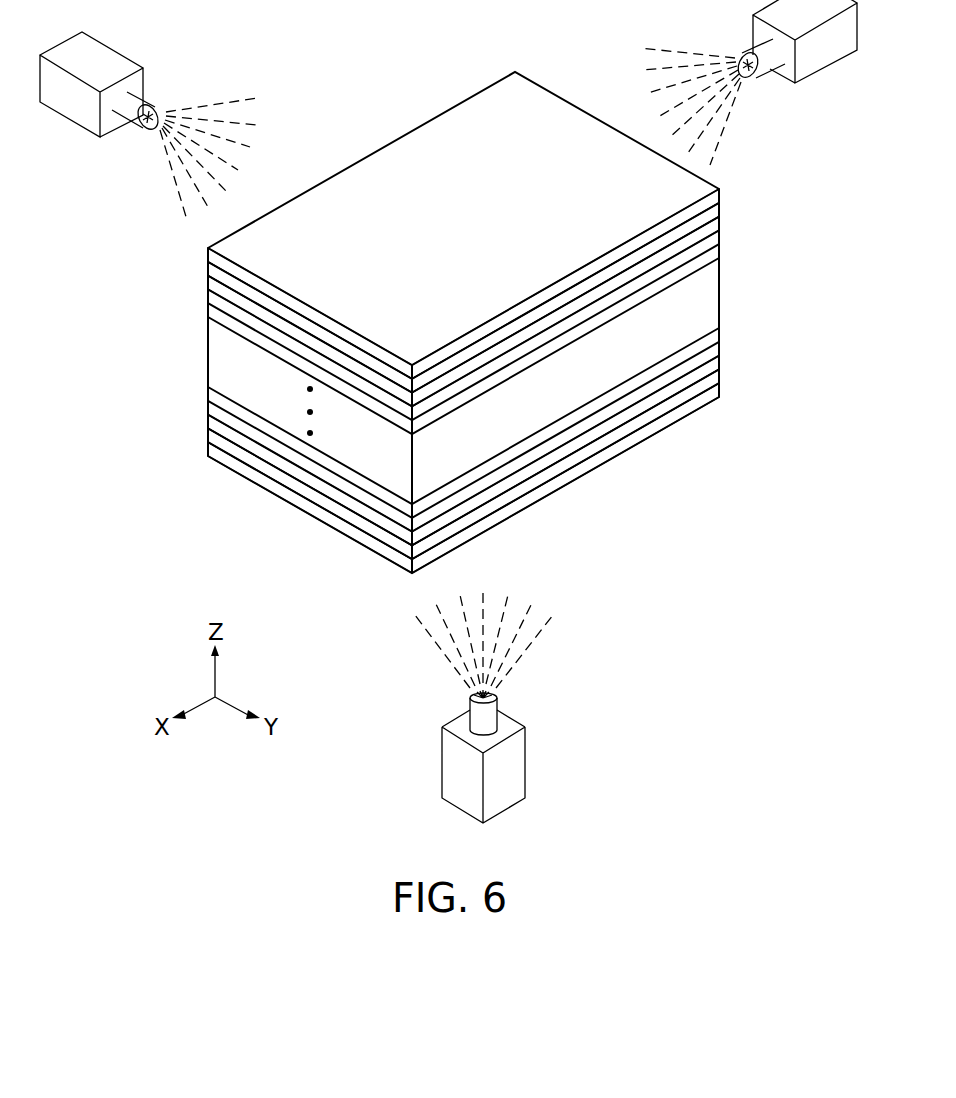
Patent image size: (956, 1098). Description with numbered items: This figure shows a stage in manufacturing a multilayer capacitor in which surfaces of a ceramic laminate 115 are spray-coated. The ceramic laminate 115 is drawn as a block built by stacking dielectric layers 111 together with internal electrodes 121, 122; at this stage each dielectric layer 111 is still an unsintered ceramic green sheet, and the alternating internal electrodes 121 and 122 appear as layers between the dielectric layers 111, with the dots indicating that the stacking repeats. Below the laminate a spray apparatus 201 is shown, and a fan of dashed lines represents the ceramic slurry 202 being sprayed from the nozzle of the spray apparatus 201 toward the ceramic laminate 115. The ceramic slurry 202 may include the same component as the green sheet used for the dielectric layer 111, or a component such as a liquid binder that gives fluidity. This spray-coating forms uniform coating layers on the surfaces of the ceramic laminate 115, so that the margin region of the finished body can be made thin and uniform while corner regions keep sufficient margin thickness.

The ceramic laminate 115 is at (533, 101).
The dielectric layer 111 is at (217, 284).
The internal electrode 121 is at (250, 288).
The internal electrode 122 is at (262, 310).
The spray apparatus 201 is at (507, 770).
The ceramic slurry 202 is at (522, 657).